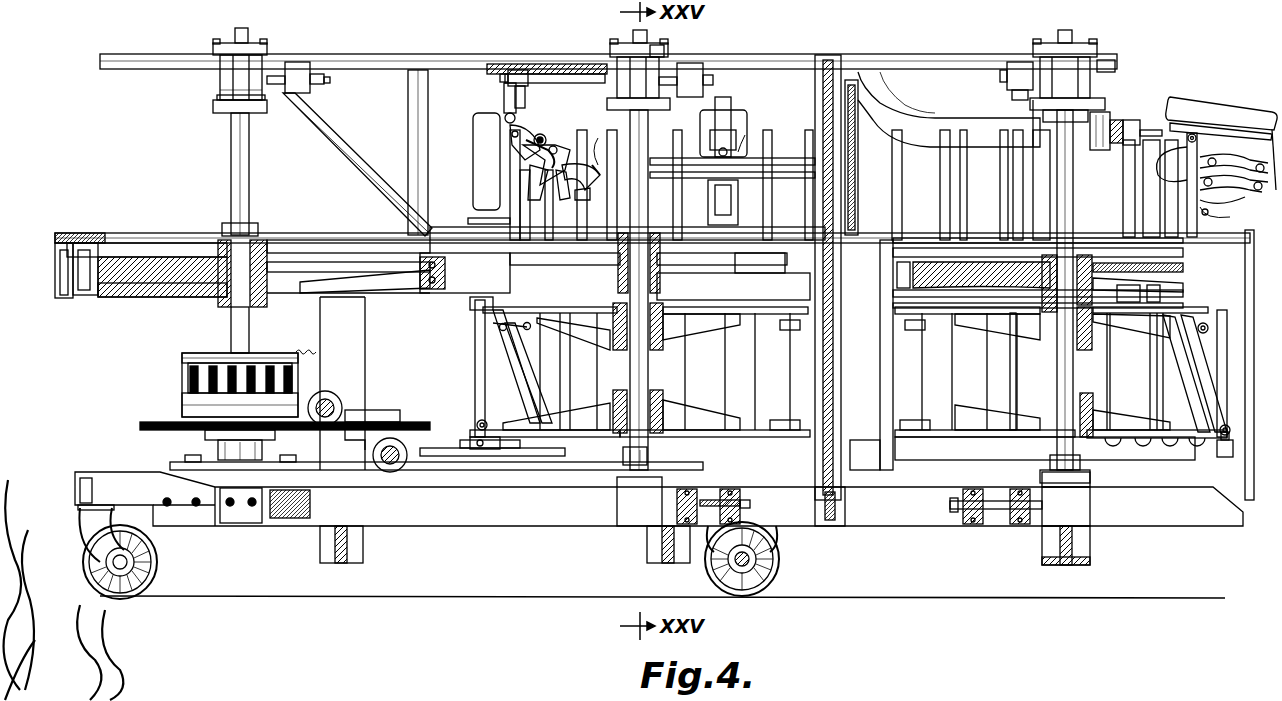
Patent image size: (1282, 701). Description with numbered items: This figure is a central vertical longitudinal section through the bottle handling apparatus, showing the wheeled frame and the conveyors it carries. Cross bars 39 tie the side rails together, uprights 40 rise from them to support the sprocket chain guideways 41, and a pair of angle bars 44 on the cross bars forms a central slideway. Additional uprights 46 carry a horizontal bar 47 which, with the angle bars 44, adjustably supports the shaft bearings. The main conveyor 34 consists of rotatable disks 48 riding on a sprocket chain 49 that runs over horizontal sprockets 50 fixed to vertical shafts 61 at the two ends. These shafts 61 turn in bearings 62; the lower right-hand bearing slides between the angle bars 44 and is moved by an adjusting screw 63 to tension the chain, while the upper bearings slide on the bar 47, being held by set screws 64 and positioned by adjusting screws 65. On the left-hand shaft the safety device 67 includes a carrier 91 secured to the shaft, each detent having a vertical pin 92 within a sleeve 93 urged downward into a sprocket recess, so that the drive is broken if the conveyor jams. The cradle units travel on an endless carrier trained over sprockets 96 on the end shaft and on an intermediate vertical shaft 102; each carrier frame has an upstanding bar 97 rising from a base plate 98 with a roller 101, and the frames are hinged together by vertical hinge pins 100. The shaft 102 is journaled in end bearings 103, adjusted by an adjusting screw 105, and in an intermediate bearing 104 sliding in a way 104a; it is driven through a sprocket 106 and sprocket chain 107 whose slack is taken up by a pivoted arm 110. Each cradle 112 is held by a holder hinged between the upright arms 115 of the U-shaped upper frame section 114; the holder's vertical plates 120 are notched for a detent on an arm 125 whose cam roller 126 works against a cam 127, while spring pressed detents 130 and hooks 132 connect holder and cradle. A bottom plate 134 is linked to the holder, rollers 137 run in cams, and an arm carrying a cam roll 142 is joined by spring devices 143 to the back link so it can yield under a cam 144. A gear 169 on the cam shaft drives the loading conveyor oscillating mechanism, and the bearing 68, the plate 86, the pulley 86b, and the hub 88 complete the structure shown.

The main conveyor 34 is at (48, 237).
The cross bars 39 is at (362, 545).
The uprights 40 is at (360, 347).
The sprocket chain guideways 41 is at (1062, 366).
The angle bars 44 is at (535, 518).
The additional uprights 46 is at (430, 137).
The horizontal bar 47 is at (765, 62).
The rotatable disks 48 is at (85, 236).
The sprocket chain 49 is at (78, 290).
The horizontal sprockets 50 is at (192, 296).
The vertical shafts 61 is at (242, 172).
The bearings 62 is at (225, 85).
The adjusting screw 63 is at (998, 516).
The set screws 64 is at (243, 28).
The adjusting screws 65 is at (288, 96).
The safety device 67 is at (172, 374).
The coupling 68 is at (1005, 82).
The plate 86 is at (152, 426).
The pulley 86b is at (388, 412).
The hub 88 is at (208, 440).
The carrier 91 is at (180, 416).
The vertical pin 92 is at (275, 366).
The sleeve 93 is at (184, 392).
The sprockets 96 is at (553, 425).
The upstanding bar 97 is at (722, 368).
The horizontal base plate 98 is at (1155, 456).
The vertical hinge pins 100 is at (474, 346).
The roller 101 is at (560, 472).
The vertical shaft 102 is at (647, 370).
The bearings 103 is at (658, 48).
The bearing 104 is at (660, 283).
The way 104a is at (758, 270).
The adjusting screw 105 is at (702, 78).
The sprocket 106 is at (708, 490).
The sprocket chain 107 is at (175, 468).
The pivoted arm 110 is at (455, 465).
The cradle 112 is at (485, 167).
The upper frame section 114 is at (949, 129).
The upright arms 115 is at (510, 190).
The vertical plates 120 is at (530, 125).
The arm 125 is at (525, 97).
The cam roller 126 is at (518, 70).
The cam 127 is at (1118, 118).
The spring pressed detents 130 is at (560, 170).
The hooks 132 is at (505, 116).
The bottom plate 134 is at (468, 221).
The rollers 137 is at (553, 146).
The cam roll 142 is at (596, 140).
The spring devices 143 is at (1240, 190).
The cam 144 is at (660, 170).
The gear 169 is at (310, 348).